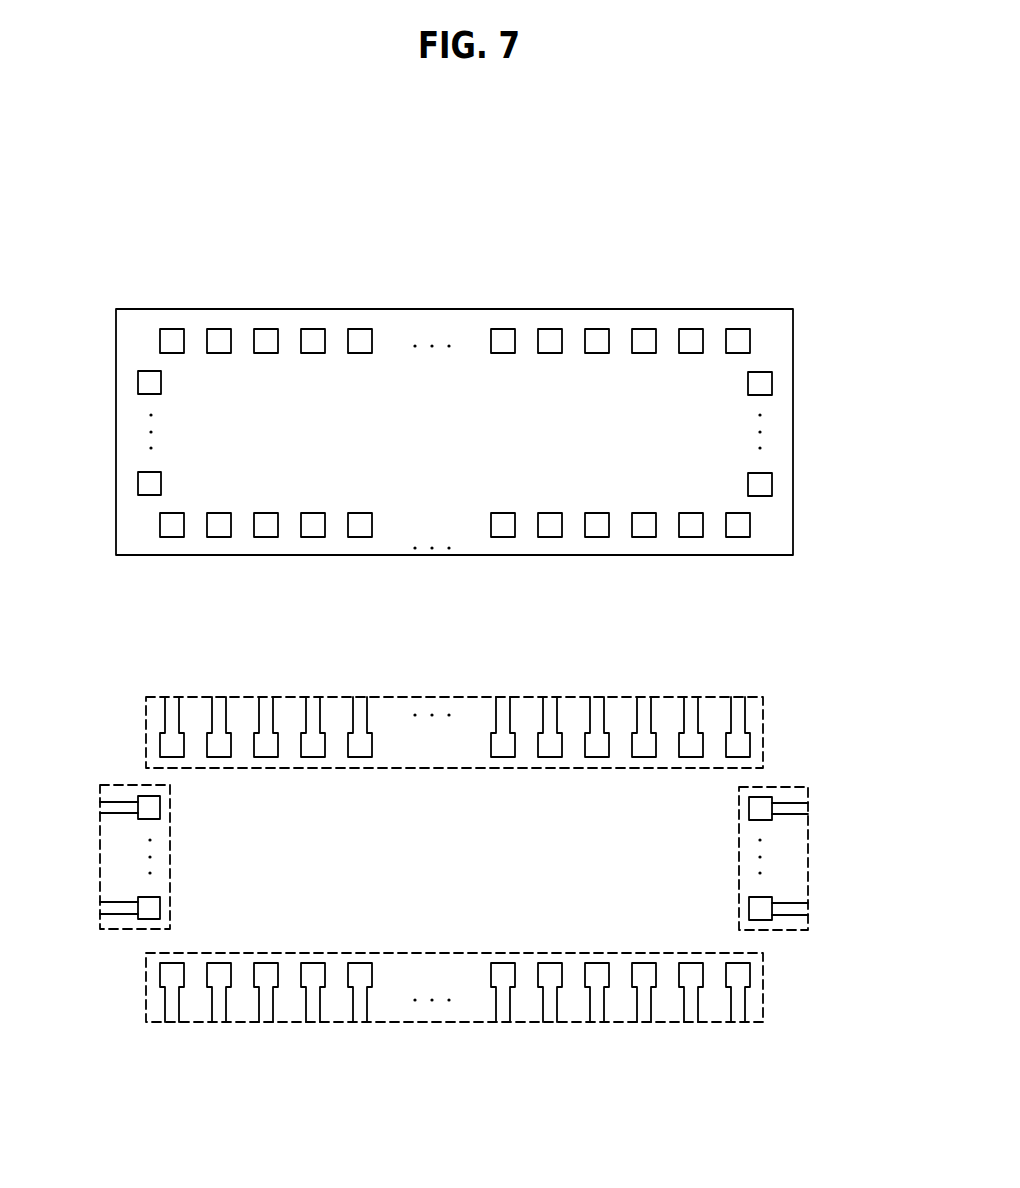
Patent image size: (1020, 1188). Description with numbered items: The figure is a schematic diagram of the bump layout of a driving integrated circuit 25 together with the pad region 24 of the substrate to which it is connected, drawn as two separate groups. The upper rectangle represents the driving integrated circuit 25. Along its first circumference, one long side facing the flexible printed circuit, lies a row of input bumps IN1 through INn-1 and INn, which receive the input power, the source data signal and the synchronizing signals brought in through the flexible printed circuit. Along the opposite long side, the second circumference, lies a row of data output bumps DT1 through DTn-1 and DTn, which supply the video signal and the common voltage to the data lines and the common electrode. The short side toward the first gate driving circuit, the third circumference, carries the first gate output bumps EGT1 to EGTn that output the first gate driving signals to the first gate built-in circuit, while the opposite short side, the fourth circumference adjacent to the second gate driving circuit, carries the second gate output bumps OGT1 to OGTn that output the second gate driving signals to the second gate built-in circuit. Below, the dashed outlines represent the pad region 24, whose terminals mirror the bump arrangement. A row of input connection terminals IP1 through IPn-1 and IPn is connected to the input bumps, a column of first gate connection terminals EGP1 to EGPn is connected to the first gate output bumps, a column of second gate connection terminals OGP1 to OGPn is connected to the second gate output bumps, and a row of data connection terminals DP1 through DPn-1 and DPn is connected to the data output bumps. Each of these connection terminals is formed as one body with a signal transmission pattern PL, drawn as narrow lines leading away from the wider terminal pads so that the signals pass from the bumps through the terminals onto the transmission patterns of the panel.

The driving integrated circuit 25 is at (782, 433).
The pad region 24 is at (713, 695).
The input bump IN1 is at (170, 340).
The input bump INn-1 is at (690, 338).
The input bump INn is at (737, 338).
The first gate output bump EGT1 is at (143, 383).
The first gate output bump EGTn is at (143, 485).
The second gate output bump OGT1 is at (763, 383).
The second gate output bump OGTn is at (763, 484).
The data output bump DT1 is at (171, 528).
The data output bump DTn-1 is at (692, 530).
The data output bump DTn is at (737, 530).
The input connection terminal IP1 is at (170, 745).
The input connection terminal IPn-1 is at (683, 745).
The input connection terminal IPn is at (745, 745).
The first gate connection terminal EGP1 is at (157, 807).
The first gate connection terminal EGPn is at (157, 907).
The second gate connection terminal OGP1 is at (753, 807).
The second gate connection terminal OGPn is at (753, 905).
The data connection terminal DP1 is at (165, 977).
The data connection terminal DPn-1 is at (685, 967).
The data connection terminal DPn is at (743, 977).
The signal transmission pattern PL is at (743, 717).